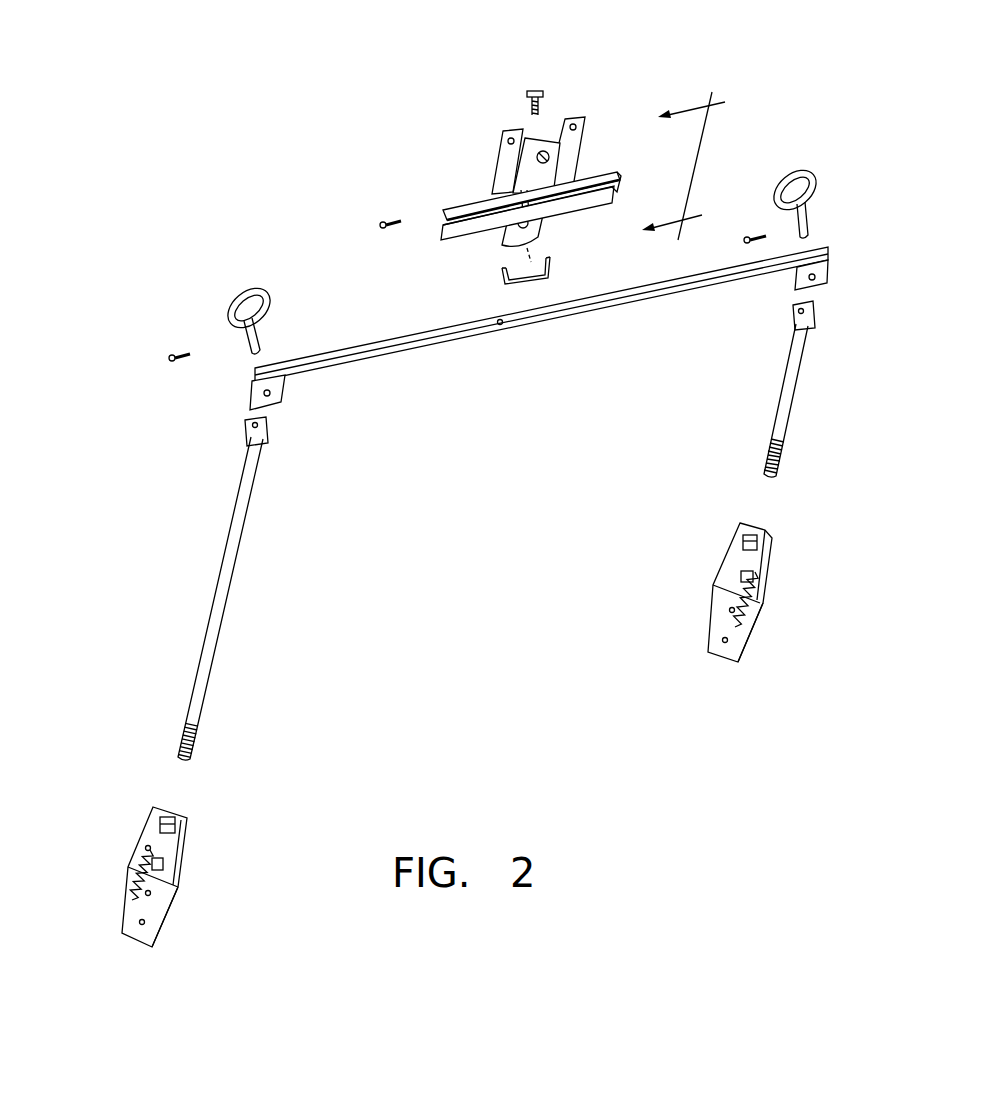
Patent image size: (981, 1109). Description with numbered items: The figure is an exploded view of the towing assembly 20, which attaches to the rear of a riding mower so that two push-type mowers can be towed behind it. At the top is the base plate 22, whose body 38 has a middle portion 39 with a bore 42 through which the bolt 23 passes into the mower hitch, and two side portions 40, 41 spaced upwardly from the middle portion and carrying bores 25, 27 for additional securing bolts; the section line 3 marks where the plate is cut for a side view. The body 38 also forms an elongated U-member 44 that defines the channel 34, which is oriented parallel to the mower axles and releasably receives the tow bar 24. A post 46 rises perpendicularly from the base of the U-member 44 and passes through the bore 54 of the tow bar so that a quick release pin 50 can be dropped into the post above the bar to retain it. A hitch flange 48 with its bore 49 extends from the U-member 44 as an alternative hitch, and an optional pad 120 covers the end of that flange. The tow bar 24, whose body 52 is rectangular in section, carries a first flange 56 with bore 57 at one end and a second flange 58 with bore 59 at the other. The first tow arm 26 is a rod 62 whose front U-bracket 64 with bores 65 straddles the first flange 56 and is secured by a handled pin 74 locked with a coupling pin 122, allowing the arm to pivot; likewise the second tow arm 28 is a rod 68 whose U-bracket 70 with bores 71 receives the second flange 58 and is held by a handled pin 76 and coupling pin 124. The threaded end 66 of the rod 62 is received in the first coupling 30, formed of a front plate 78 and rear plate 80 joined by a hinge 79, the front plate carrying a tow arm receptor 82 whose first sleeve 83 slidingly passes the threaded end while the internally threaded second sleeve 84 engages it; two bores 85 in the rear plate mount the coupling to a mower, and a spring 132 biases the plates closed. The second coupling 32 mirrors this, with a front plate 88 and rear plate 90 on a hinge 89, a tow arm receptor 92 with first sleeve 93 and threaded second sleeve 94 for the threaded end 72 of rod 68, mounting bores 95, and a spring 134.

The section line 3- 3 is at (696, 161).
The towing assembly 20 is at (272, 95).
The base plate 22 is at (446, 116).
The bolt 23 is at (540, 90).
The tow bar 24 is at (423, 398).
The bore 25 is at (508, 140).
The first tow arm 26 is at (801, 445).
The bore 27 is at (577, 128).
The second tow arm 28 is at (278, 652).
The first coupling 30 is at (792, 608).
The second coupling 32 is at (244, 860).
The channel 34 is at (647, 177).
The body 38 is at (604, 110).
The middle portion 39 is at (539, 142).
The side portion 40 is at (507, 163).
The side portion 41 is at (578, 158).
The bore 42 is at (548, 151).
The U-member 44 is at (578, 210).
The post 46 is at (520, 203).
The hitch flange 48 is at (543, 229).
The bore 49 is at (501, 241).
The pin 50 is at (387, 219).
The cross bar body 52 is at (367, 347).
The bore 54 is at (517, 321).
The first flange 56 is at (826, 280).
The bore 57 is at (795, 279).
The second flange 58 is at (250, 400).
The bore 59 is at (285, 388).
The rod 62 is at (799, 383).
The U-bracket 64 is at (814, 325).
The bore 65 is at (792, 318).
The threaded end 66 is at (767, 463).
The rod 68 is at (225, 580).
The U-bracket 70 is at (245, 437).
The bore 71 is at (245, 423).
The threaded end 72 is at (183, 734).
The handled pin 74 is at (795, 168).
The handled pin 76 is at (240, 290).
The front plate 78 is at (770, 557).
The hinge 79 is at (716, 584).
The rear plate 80 is at (744, 648).
The tow arm receptor 82 is at (677, 524).
The first sleeve 83 is at (743, 540).
The second sleeve 84 is at (737, 580).
The bores 85 is at (724, 639).
The front plate 88 is at (187, 848).
The hinge 89 is at (145, 867).
The rear plate 90 is at (154, 938).
The tow arm receptor 92 is at (122, 813).
The first sleeve 93 is at (172, 818).
The second sleeve 94 is at (157, 872).
The bores 95 is at (144, 922).
The pad 120 is at (507, 283).
The coupling pin 122 is at (752, 233).
The coupling pin 124 is at (178, 353).
The spring 132 is at (752, 612).
The spring 134 is at (146, 848).